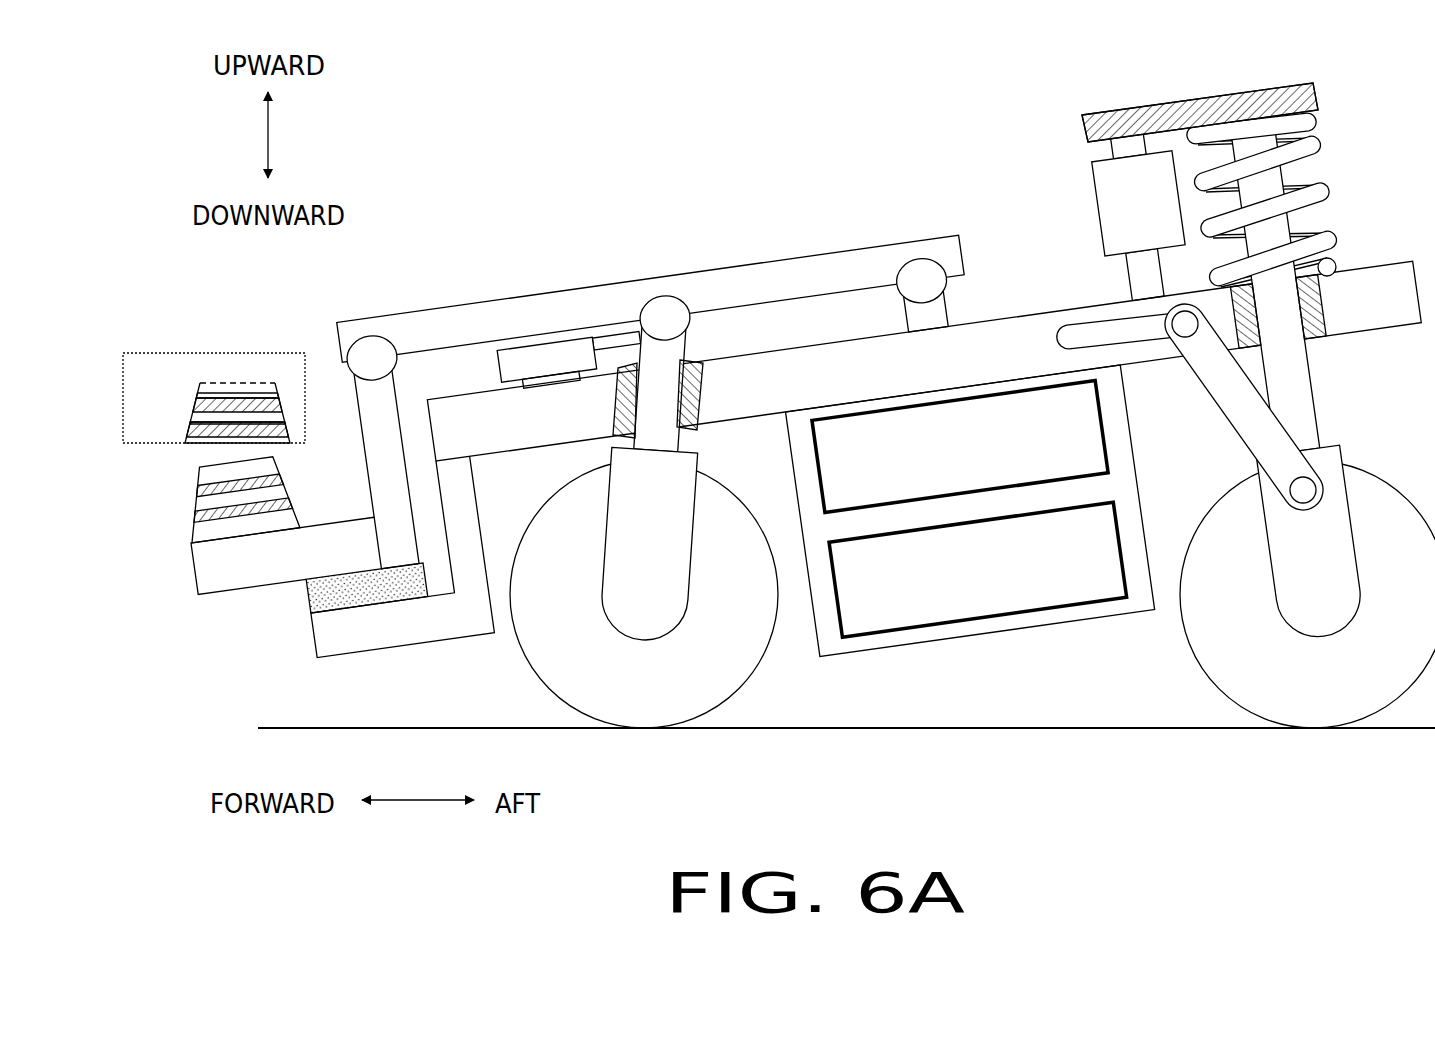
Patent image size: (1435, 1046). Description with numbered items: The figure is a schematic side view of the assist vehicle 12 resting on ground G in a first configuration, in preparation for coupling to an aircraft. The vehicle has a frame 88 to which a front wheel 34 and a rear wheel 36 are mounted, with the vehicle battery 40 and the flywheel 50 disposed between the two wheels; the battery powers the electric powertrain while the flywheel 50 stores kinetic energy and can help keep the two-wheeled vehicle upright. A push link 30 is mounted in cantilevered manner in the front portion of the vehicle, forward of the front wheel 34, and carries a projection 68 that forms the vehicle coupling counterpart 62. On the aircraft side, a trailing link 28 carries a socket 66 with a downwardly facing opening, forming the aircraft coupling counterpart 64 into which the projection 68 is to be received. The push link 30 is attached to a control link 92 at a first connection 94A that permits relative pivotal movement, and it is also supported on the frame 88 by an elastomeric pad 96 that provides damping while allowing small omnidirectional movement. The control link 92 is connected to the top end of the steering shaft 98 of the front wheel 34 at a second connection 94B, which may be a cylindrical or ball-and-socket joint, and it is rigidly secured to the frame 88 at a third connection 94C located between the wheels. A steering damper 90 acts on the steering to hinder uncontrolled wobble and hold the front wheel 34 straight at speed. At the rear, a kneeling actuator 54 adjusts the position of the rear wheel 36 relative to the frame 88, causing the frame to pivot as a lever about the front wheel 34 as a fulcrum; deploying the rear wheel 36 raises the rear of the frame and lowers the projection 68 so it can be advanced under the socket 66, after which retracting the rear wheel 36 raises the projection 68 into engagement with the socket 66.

The assist vehicle 12 is at (492, 144).
The trailing link 28 is at (200, 370).
The push link 30 is at (258, 573).
The front wheel 34 is at (655, 702).
The rear wheel 36 is at (1328, 705).
The vehicle battery 40 is at (1025, 385).
The flywheel 50 is at (1083, 603).
The kneeling actuator 54 is at (1112, 192).
The vehicle coupling counterpart 62 is at (280, 598).
The aircraft coupling counterpart 64 is at (209, 366).
The socket 66 is at (205, 440).
The projection 68 is at (203, 534).
The frame 88 is at (414, 624).
The steering damper 90 is at (552, 352).
The control link 92 is at (475, 312).
The first connection 94A is at (374, 355).
The second connection 94B is at (662, 314).
The third connection 94C is at (920, 280).
The pad 96 is at (349, 592).
The steering shaft 98 is at (670, 352).
The ground G is at (1097, 732).